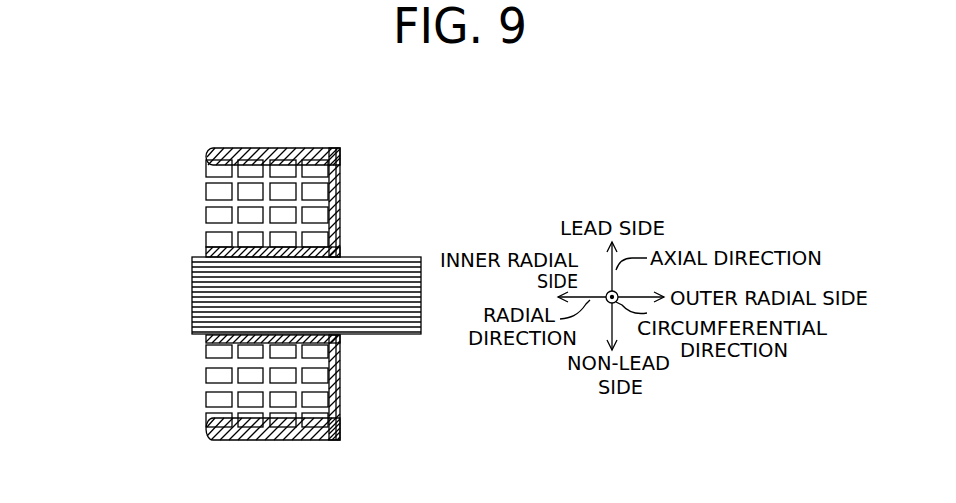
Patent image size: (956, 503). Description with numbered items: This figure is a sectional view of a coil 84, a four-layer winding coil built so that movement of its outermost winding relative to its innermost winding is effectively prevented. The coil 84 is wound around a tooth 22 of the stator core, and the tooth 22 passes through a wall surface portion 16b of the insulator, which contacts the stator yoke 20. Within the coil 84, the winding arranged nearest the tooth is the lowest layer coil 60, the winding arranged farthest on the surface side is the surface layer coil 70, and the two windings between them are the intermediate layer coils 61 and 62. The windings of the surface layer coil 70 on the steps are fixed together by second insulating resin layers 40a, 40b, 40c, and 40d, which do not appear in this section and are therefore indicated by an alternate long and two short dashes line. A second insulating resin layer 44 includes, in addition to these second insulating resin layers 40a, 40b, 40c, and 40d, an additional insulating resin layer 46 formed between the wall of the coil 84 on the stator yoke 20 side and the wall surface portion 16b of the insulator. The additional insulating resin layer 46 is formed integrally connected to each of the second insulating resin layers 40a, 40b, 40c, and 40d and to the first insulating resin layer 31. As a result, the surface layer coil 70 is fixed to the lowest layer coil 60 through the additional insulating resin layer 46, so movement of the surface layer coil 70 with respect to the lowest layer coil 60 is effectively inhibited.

The wall surface portion 16b is at (340, 212).
The stator yoke 20 is at (395, 310).
The tooth 22 is at (290, 310).
The first insulating resin layer 31 is at (210, 252).
The second insulating resin layer 40a is at (268, 148).
The second insulating resin layer 40b is at (273, 156).
The second insulating resin layer 40c is at (262, 442).
The second insulating resin layer 40d is at (273, 429).
The second insulating resin layer 44 is at (404, 115).
The additional insulating resin layer 46 is at (340, 186).
The lowest layer coil 60 is at (212, 238).
The intermediate layer coil 61 is at (212, 213).
The intermediate layer coil 62 is at (212, 190).
The surface layer coil 70 is at (212, 158).
The coil 84 is at (117, 268).